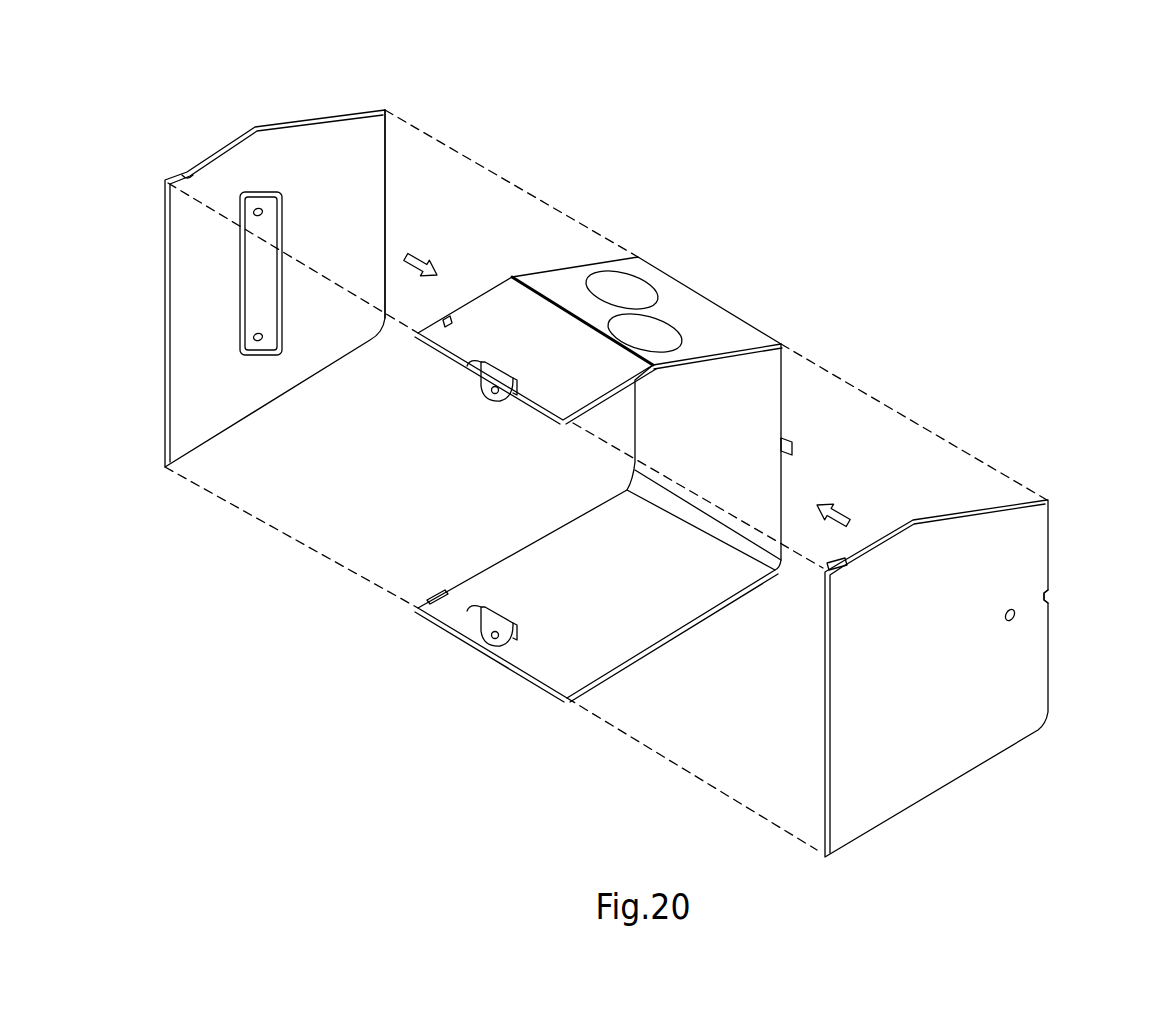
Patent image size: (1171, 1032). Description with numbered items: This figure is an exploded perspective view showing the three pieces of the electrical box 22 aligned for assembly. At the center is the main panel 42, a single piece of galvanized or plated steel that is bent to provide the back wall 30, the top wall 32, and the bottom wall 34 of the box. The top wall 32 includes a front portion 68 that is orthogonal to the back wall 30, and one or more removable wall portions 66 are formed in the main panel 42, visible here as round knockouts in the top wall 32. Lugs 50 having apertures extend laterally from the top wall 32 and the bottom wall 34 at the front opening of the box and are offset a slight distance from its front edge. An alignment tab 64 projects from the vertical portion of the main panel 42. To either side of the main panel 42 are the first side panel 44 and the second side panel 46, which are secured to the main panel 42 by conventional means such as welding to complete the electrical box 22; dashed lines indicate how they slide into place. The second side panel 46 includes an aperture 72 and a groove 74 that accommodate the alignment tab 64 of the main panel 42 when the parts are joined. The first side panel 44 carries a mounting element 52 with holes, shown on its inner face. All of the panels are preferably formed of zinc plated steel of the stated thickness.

The electrical box 22 is at (886, 229).
The back wall 30 is at (701, 425).
The top wall 32 is at (558, 285).
The bottom wall 34 is at (596, 598).
The main panel 42 is at (713, 302).
The first side panel 44 is at (378, 106).
The second side panel 46 is at (1047, 500).
The lug 50 is at (500, 400).
The mounting plate 52 is at (249, 290).
The alignment tab 64 is at (792, 452).
The removable wall portion 66 is at (654, 338).
The front portion 68 is at (535, 355).
The aperture 72 is at (1005, 620).
The groove 74 is at (1053, 594).